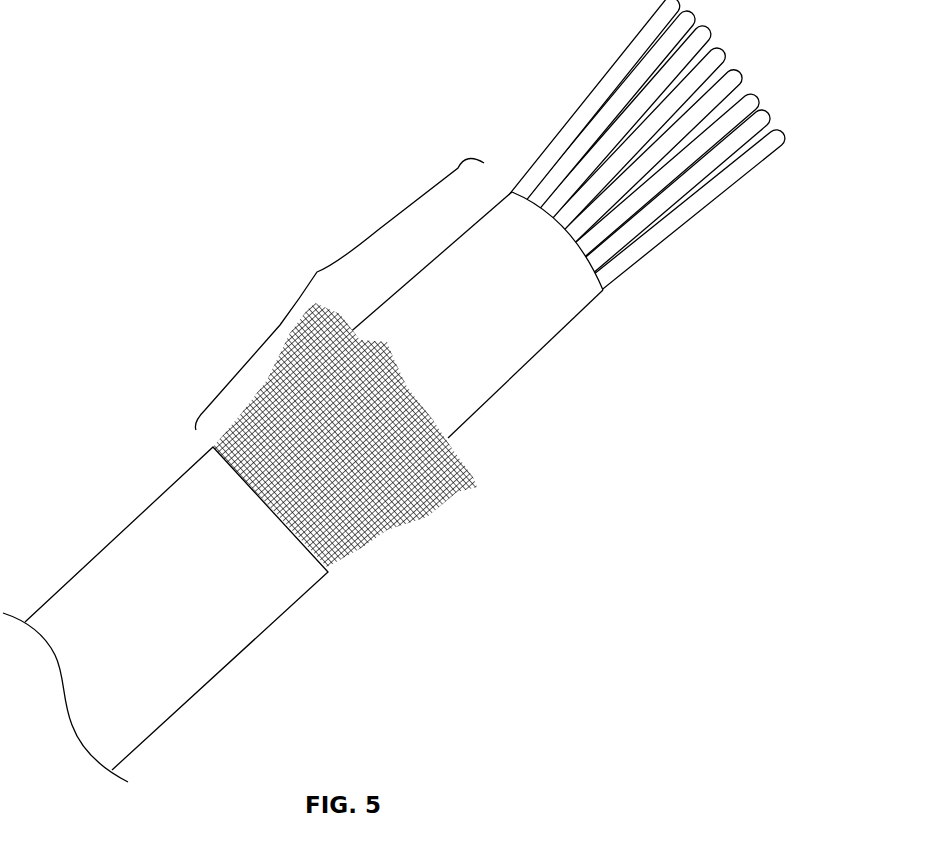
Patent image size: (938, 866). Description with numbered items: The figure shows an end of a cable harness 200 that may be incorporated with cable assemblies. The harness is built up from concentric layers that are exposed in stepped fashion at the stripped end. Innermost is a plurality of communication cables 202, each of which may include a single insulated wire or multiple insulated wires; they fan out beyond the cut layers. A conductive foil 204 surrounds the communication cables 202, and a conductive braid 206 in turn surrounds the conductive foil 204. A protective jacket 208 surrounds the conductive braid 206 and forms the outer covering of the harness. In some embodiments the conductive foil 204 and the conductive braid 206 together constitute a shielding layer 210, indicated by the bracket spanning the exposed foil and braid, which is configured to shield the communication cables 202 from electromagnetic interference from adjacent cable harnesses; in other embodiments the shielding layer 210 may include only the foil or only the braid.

The cable harness 200 is at (394, 391).
The communication cables 202 is at (717, 227).
The conductive foil 204 is at (535, 333).
The conductive braid 206 is at (398, 528).
The protective jacket 208 is at (242, 638).
The shielding layer 210 is at (317, 272).